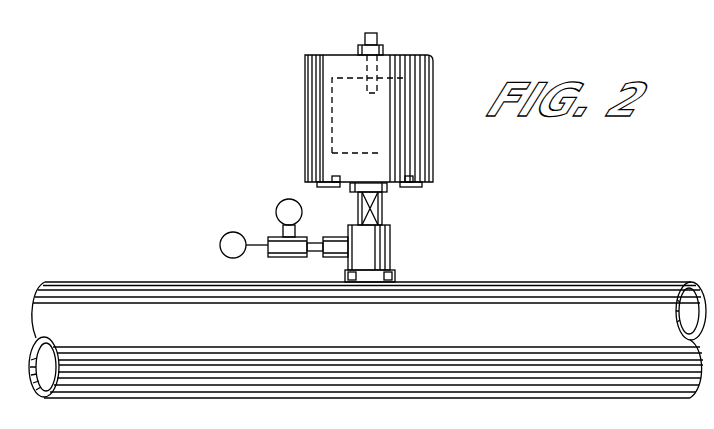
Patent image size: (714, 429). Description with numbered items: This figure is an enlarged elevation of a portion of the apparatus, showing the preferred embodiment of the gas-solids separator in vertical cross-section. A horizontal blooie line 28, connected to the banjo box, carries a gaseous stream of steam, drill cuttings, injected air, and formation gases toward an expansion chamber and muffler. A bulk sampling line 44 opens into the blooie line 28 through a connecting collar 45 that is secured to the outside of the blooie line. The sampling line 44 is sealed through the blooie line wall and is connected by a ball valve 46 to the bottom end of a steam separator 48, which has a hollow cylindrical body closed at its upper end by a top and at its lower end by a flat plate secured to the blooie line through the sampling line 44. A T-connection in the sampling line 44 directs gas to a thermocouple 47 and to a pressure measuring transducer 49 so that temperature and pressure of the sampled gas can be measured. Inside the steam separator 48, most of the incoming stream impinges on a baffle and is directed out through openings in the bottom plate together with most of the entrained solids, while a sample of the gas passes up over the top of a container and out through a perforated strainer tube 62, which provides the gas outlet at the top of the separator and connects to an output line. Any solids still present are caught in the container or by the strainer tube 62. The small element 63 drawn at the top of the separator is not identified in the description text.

The blooie line 28 is at (508, 303).
The bulk sampling line 44 is at (370, 242).
The connecting collar 45 is at (395, 270).
The ball valve 46 is at (382, 208).
The thermocouple 47 is at (220, 244).
The steam separator 48 is at (433, 78).
The pressure measuring transducer 49 is at (286, 199).
The perforated strainer tube 62 is at (378, 70).
The shaft end 63 is at (365, 37).